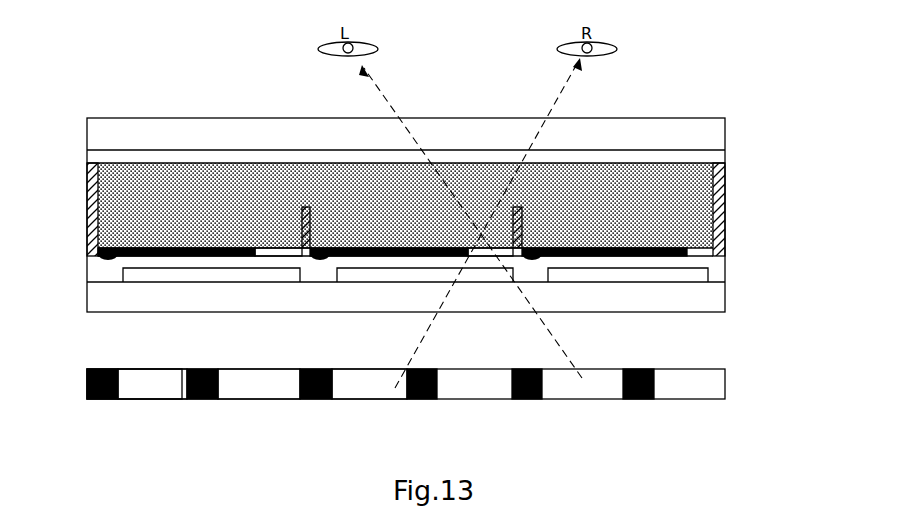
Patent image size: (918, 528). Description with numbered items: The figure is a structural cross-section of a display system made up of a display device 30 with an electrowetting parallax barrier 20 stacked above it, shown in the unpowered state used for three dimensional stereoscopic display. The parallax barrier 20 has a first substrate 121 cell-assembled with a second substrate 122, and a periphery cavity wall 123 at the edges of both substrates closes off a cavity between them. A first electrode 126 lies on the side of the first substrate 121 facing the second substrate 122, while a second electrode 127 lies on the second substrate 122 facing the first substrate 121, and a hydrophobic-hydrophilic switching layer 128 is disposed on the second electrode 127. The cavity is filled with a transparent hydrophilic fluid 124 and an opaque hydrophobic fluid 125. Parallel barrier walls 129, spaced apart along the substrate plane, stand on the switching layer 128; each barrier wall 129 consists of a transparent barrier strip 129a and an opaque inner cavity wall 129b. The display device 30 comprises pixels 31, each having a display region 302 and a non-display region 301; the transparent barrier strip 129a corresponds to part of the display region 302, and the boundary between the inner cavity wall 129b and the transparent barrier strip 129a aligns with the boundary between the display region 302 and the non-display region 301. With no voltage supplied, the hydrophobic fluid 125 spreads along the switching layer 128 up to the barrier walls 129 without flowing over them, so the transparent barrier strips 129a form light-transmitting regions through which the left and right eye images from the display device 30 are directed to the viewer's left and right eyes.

The parallax barrier 20 is at (788, 117).
The first substrate 121 is at (712, 135).
The first electrode 126 is at (712, 157).
The periphery cavity wall 123 is at (92, 178).
The hydrophilic fluid 124 is at (99, 207).
The hydrophobic fluid 125 is at (99, 233).
The hydrophobic-hydrophilic switching layer 128 is at (712, 261).
The second electrode 127 is at (708, 273).
The second substrate 122 is at (712, 301).
The barrier wall 129 is at (388, 281).
The transparent barrier strip 129a is at (283, 256).
The inner cavity wall 129b is at (304, 256).
The display device 30 is at (743, 368).
The pixel 31 is at (182, 365).
The non-display region 301 is at (103, 400).
The display region 302 is at (362, 390).